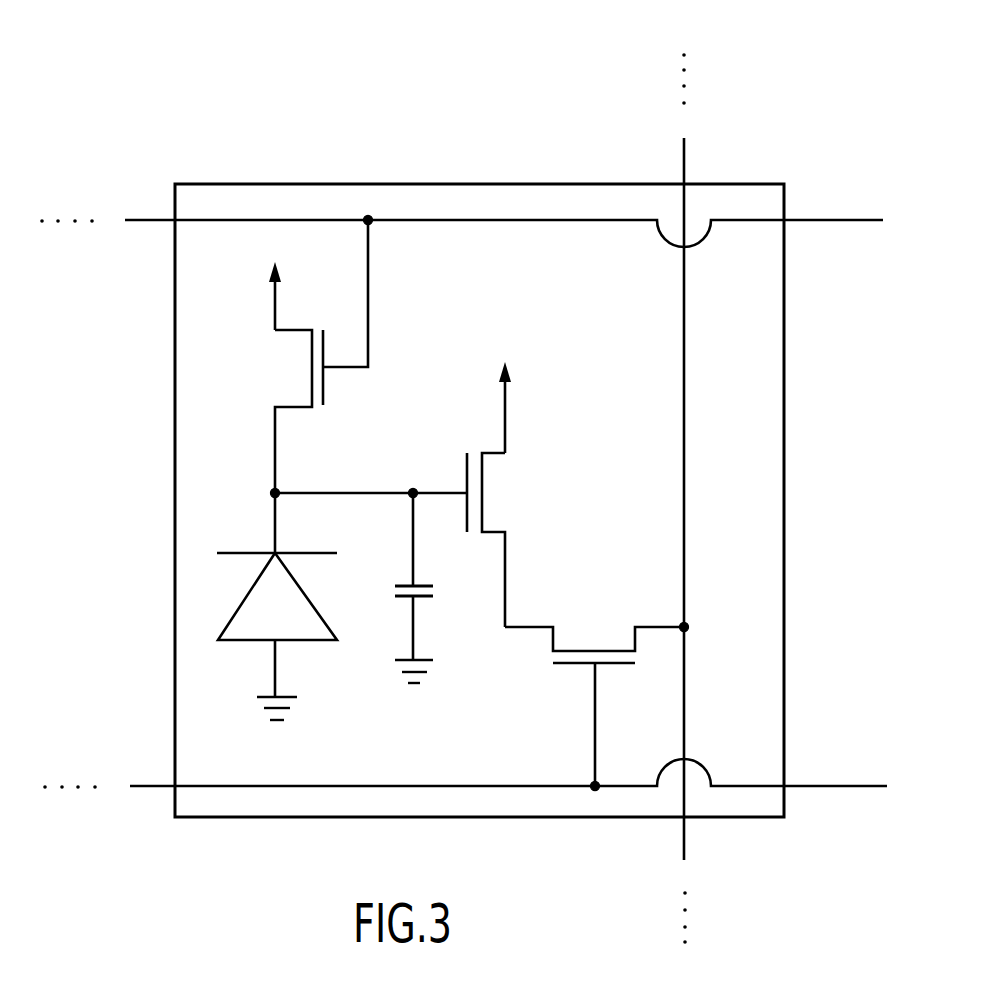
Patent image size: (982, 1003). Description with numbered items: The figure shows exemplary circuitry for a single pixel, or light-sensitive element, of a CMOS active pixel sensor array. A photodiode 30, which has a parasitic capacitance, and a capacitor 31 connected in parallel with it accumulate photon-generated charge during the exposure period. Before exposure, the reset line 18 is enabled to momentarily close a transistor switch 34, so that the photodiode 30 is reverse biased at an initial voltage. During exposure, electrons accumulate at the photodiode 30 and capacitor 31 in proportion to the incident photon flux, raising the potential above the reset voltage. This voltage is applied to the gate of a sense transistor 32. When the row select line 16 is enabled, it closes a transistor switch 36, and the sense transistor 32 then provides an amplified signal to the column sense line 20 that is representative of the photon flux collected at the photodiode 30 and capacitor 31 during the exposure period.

The row select line 16 is at (465, 754).
The reset line 18 is at (461, 207).
The column sense line 20 is at (766, 501).
The photodiode 30 is at (302, 600).
The capacitor 31 is at (437, 593).
The sense transistor 32 is at (490, 490).
The transistor switch 34 is at (310, 368).
The transistor switch 36 is at (592, 645).